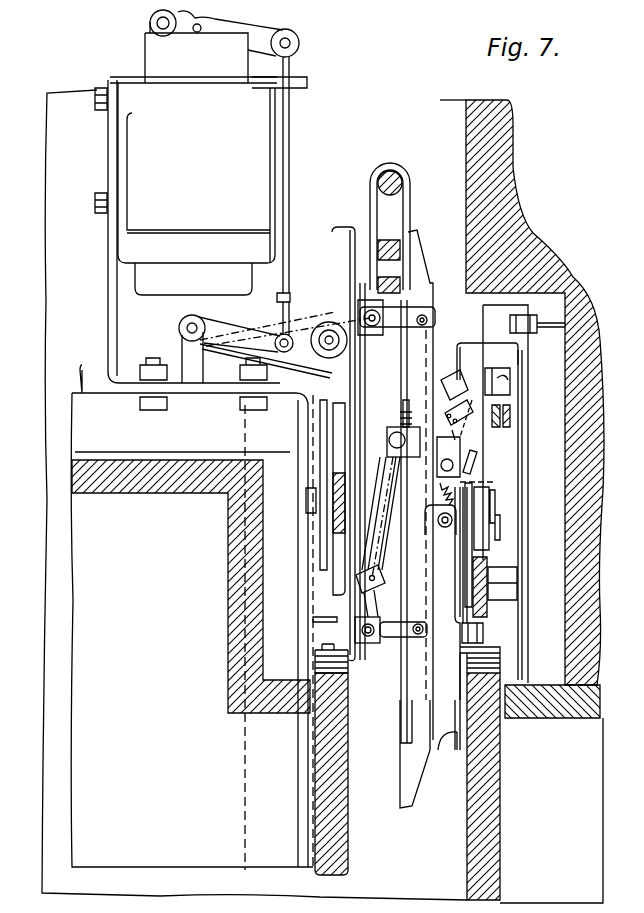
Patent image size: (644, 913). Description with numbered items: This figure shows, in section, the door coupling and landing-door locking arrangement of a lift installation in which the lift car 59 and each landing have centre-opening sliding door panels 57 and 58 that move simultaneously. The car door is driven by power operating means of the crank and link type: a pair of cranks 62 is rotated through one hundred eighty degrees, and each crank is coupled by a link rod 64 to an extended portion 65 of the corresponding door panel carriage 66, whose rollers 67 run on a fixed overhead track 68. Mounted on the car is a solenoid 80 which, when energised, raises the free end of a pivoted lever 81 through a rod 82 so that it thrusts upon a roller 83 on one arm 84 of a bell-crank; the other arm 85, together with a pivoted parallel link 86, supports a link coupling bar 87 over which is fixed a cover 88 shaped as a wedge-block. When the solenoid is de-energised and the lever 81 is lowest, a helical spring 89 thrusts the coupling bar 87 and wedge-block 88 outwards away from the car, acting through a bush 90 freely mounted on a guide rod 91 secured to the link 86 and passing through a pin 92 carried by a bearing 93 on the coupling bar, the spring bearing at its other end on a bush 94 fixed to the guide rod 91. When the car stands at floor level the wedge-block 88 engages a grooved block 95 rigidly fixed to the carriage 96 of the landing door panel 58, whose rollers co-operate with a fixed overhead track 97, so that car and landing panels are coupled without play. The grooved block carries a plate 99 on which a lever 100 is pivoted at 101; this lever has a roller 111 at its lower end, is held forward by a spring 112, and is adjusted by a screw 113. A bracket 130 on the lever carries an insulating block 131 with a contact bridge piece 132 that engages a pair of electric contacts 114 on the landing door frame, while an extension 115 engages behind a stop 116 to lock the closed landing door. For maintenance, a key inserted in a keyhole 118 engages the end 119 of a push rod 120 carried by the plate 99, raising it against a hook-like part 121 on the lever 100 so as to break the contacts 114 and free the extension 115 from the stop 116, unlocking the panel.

The car door panel 57 is at (338, 856).
The landing door panel 58 is at (483, 858).
The lift car 59 is at (150, 868).
The crank 62 is at (390, 240).
The link rod 64 is at (379, 178).
The extended portion 65 is at (352, 225).
The door panel carriage 66 is at (354, 636).
The rollers 67 is at (320, 588).
The fixed overhead track 68 is at (315, 505).
The solenoid 80 is at (130, 143).
The pivoted lever 81 is at (239, 352).
The rod 82 is at (295, 135).
The roller 83 is at (273, 355).
The bell-crank arm 84 is at (374, 335).
The bell-crank arm 85 is at (380, 330).
The pivoted parallel link 86 is at (391, 640).
The link coupling bar 87 is at (410, 377).
The cover 88 is at (435, 320).
The helical spring 89 is at (375, 586).
The bush 90 is at (393, 437).
The guide rod 91 is at (380, 492).
The pin 92 is at (393, 418).
The bearing 93 is at (412, 428).
The bush 94 is at (371, 618).
The grooved block 95 is at (467, 540).
The landing door panel carriage 96 is at (483, 631).
The fixed overhead track 97 is at (486, 580).
The plate 99 is at (470, 555).
The lever 100 is at (468, 447).
The pivot 101 is at (454, 438).
The roller 111 is at (470, 520).
The spring 112 is at (477, 487).
The screw 113 is at (478, 461).
The electric contacts 114 is at (510, 388).
The extension 115 is at (487, 361).
The stop 116 is at (517, 374).
The keyhole 118 is at (503, 740).
The push rod end 119 is at (487, 766).
The push rod 120 is at (445, 751).
The hook-like part 121 is at (478, 475).
The bracket 130 is at (448, 395).
The insulating block 131 is at (466, 385).
The contact bridge piece 132 is at (507, 420).